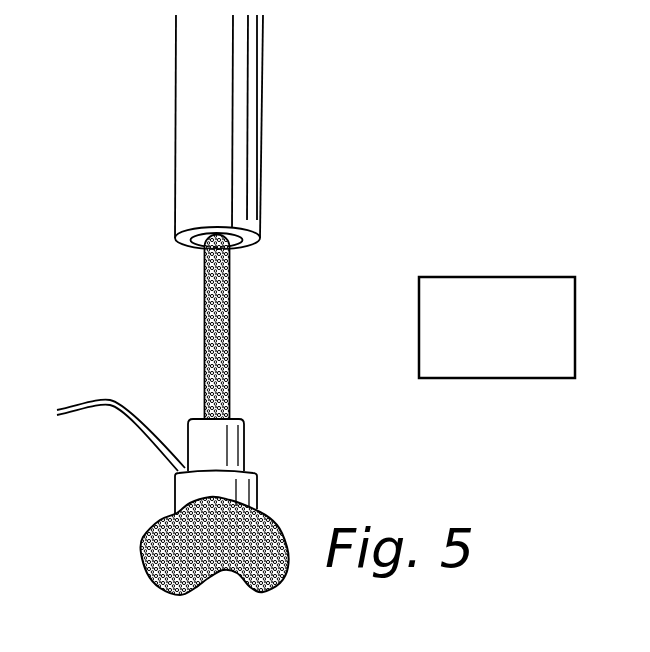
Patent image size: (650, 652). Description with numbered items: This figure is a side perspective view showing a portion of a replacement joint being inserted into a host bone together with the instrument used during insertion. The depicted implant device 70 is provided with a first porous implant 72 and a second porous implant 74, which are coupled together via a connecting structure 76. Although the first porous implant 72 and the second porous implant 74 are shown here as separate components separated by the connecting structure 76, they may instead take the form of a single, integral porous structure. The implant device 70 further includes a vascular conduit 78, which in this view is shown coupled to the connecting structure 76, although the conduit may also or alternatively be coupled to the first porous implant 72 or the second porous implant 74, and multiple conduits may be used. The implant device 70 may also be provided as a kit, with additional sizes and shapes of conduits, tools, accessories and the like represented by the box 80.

The implant device 70 is at (268, 448).
The first porous implant 72 is at (230, 338).
The second porous implant 74 is at (142, 542).
The connecting structure 76 is at (173, 487).
The vascular conduit 78 is at (104, 399).
The box 80 is at (508, 347).